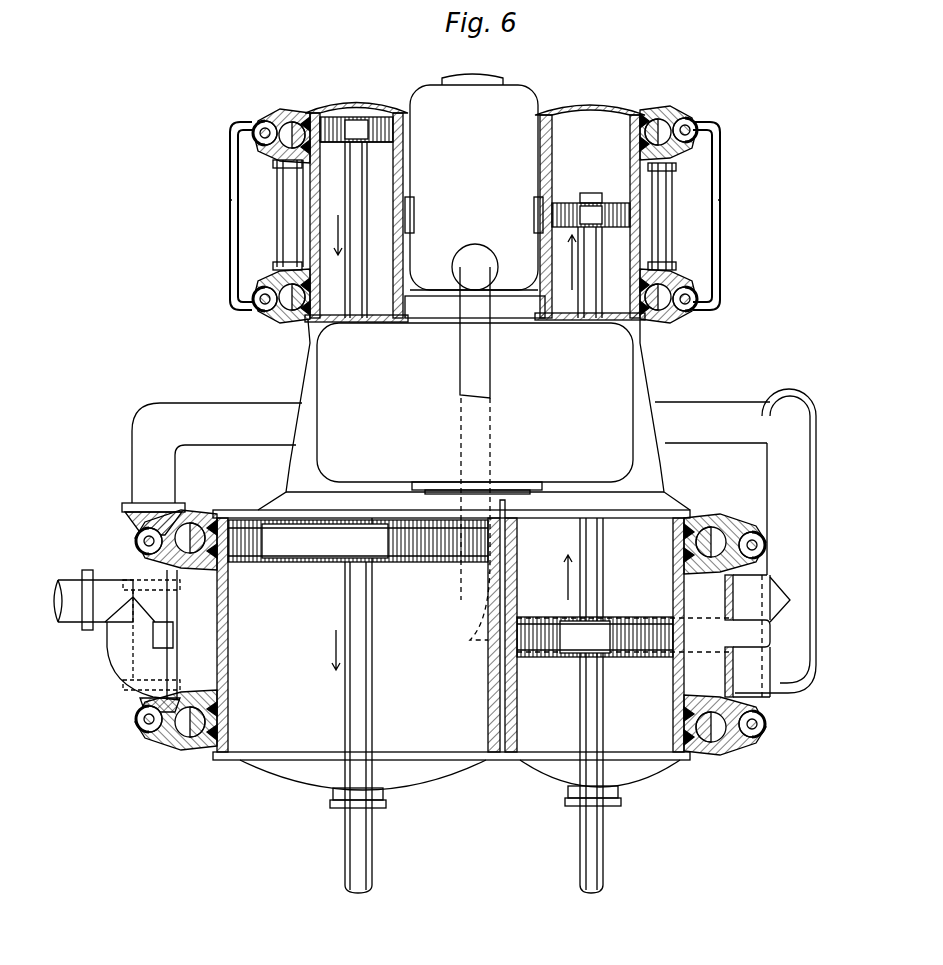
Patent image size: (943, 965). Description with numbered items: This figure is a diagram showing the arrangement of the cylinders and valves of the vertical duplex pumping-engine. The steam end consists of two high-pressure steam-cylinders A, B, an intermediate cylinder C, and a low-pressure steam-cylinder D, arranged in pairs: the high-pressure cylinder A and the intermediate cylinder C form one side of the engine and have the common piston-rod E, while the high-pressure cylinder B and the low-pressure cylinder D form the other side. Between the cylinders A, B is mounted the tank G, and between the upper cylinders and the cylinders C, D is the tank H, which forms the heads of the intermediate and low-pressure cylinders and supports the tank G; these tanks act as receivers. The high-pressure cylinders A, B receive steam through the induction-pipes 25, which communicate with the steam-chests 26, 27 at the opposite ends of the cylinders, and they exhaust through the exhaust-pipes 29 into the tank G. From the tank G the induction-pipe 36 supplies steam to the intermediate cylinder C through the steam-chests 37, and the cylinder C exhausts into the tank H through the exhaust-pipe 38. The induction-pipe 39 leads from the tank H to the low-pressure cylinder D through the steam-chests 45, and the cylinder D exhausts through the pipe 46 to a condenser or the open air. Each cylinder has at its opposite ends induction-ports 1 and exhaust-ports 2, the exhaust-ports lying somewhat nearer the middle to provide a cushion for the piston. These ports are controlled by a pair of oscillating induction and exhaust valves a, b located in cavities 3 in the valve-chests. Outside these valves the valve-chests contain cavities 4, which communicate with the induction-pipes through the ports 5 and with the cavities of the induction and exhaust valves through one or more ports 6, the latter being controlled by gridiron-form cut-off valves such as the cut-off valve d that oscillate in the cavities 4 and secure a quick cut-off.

The induction-ports 1 is at (312, 118).
The exhaust-ports 2 is at (680, 722).
The cavities 3 is at (450, 434).
The cavities 4 is at (770, 738).
The ports 5 is at (130, 712).
The ports 6 is at (160, 765).
The induction-pipes 25 is at (230, 195).
The steam-chest 26 is at (660, 118).
The steam-chest 27 is at (288, 122).
The exhaust-pipes 29 is at (277, 212).
The induction-pipe 36 is at (782, 575).
The steam-chests 37 is at (730, 754).
The exhaust-pipe 38 is at (735, 543).
The induction-pipe 39 is at (128, 702).
The steam-chests 45 is at (201, 637).
The pipe 46 is at (68, 578).
The induction and exhaust valve a is at (712, 580).
The induction and exhaust valve b is at (452, 545).
The cut-off valve d is at (459, 536).
The high-pressure steam-cylinder A is at (590, 212).
The high-pressure steam-cylinder B is at (356, 213).
The intermediate cylinder C is at (124, 541).
The low-pressure steam-cylinder D is at (451, 645).
The piston-rod E is at (367, 270).
The tank G is at (475, 196).
The tank H is at (474, 415).